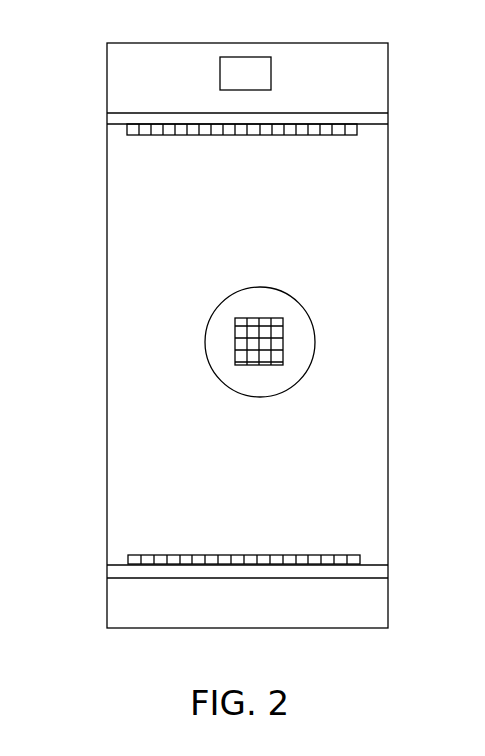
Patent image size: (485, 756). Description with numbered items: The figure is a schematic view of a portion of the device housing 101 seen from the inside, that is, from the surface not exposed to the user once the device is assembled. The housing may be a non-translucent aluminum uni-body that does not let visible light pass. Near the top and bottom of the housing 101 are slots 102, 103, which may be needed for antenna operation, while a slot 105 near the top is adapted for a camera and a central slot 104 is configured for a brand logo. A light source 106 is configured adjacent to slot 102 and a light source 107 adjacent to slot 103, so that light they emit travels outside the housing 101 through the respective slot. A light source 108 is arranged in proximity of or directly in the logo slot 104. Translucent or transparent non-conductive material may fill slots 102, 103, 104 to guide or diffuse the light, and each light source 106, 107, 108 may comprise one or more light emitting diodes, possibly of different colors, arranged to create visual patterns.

The device housing 101 is at (389, 218).
The slot 102 is at (389, 119).
The slot 103 is at (107, 571).
The slot 104 is at (247, 288).
The slot 105 is at (243, 58).
The light source 106 is at (167, 137).
The light source 107 is at (193, 552).
The light source 108 is at (232, 335).